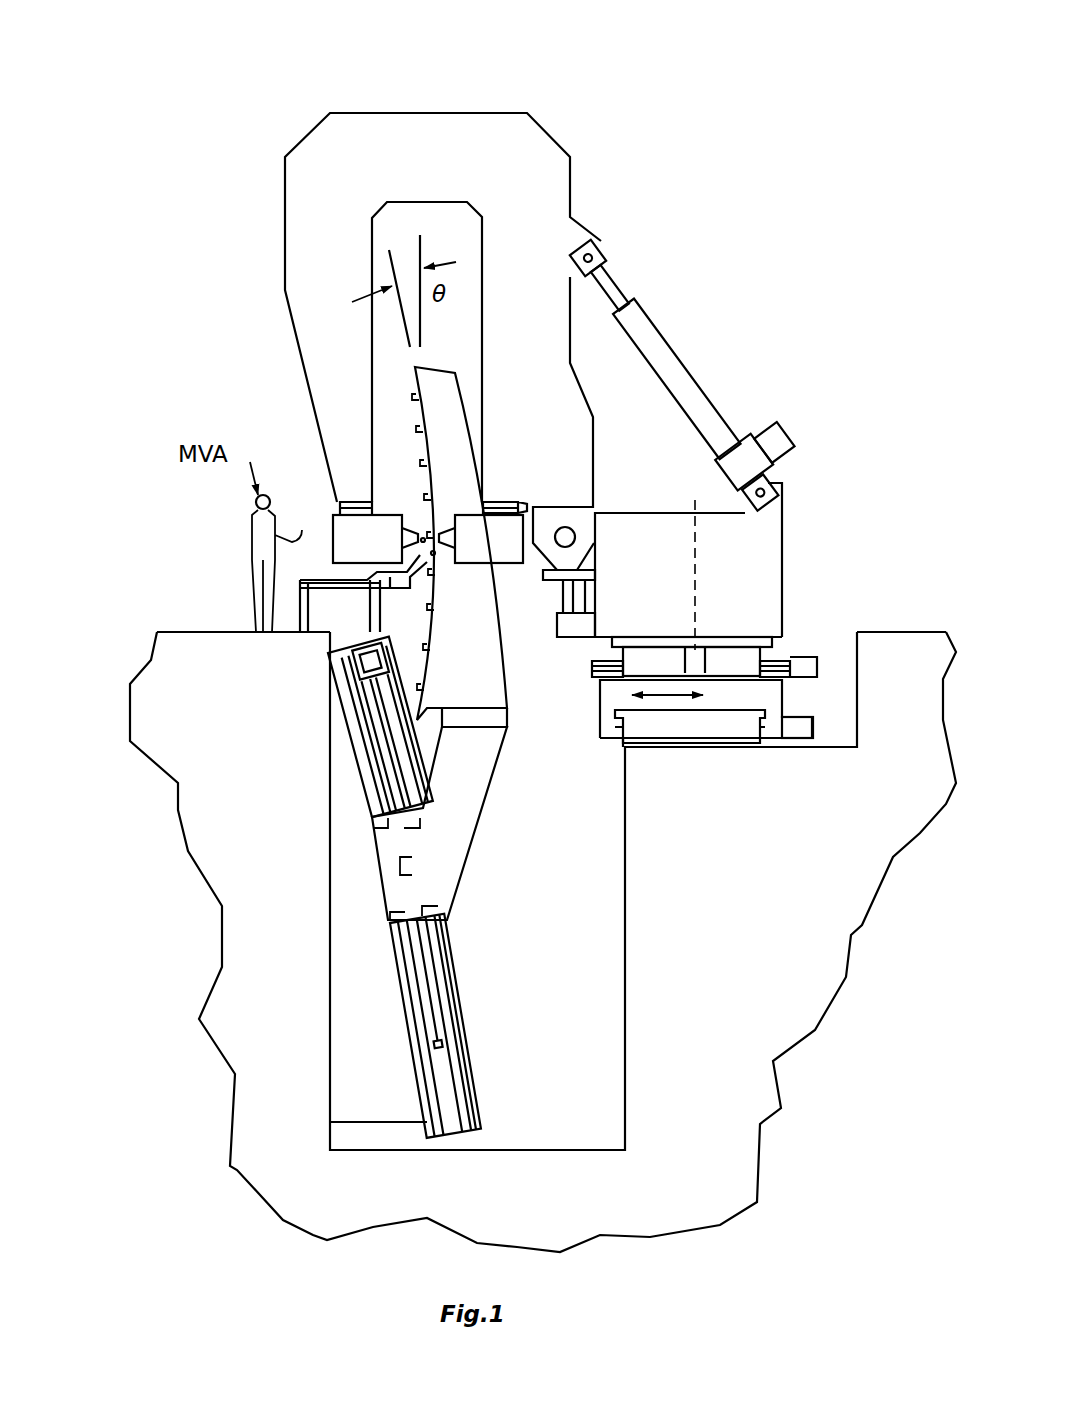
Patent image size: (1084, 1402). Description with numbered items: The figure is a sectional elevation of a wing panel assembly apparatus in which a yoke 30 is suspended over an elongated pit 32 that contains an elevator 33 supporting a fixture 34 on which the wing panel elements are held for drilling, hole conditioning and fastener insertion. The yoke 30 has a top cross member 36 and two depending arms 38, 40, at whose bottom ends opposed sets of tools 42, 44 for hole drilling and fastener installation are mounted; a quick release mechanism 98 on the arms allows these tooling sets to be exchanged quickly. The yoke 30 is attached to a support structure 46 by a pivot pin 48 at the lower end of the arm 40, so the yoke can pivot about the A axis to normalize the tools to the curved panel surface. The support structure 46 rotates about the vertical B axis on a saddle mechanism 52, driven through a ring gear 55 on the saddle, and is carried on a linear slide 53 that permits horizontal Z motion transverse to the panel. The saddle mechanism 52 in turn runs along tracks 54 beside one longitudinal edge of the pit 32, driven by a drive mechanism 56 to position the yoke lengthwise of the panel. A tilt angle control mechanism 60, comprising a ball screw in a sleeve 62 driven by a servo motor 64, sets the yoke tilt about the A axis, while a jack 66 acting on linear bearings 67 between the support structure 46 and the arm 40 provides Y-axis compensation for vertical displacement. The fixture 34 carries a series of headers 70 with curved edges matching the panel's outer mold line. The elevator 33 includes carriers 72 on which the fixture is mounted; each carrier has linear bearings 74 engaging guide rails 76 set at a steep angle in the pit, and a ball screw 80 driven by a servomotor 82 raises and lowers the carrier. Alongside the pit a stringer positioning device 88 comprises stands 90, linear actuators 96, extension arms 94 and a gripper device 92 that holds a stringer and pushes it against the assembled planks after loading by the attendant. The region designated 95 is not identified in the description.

The yoke 30 is at (220, 142).
The elongated pit 32 is at (587, 997).
The elevator 33 is at (463, 1003).
The fixture 34 is at (513, 768).
The top cross member 36 is at (418, 152).
The depending arm 38 is at (330, 345).
The depending arm 40 is at (530, 250).
The set of tools 42 is at (350, 535).
The set of tools 44 is at (507, 533).
The support structure 46 is at (797, 540).
The pivot pin 48 is at (577, 523).
The saddle mechanism 52 is at (795, 697).
The linear slide 53 is at (777, 655).
The tracks 54 is at (690, 725).
The ring gear 55 is at (727, 636).
The drive mechanism 56 is at (796, 727).
The tilt angle control mechanism 60 is at (720, 361).
The sleeve 62 is at (677, 379).
The servo motor 64 is at (774, 442).
The jack 66 is at (565, 618).
The linear bearings 67 is at (597, 580).
The headers 70 is at (455, 407).
The carriers 72 is at (447, 880).
The linear bearings 74 is at (390, 923).
The guide rails 76 is at (329, 731).
The ball screw 80 is at (423, 965).
The servomotor 82 is at (370, 661).
The stringer positioning device 88 is at (298, 562).
The stands 90 is at (305, 612).
The gripper device 92 is at (433, 553).
The extension arms 94 is at (423, 540).
The ground 95 is at (543, 942).
The linear actuators 96 is at (305, 580).
The quick release mechanism 98 is at (500, 498).